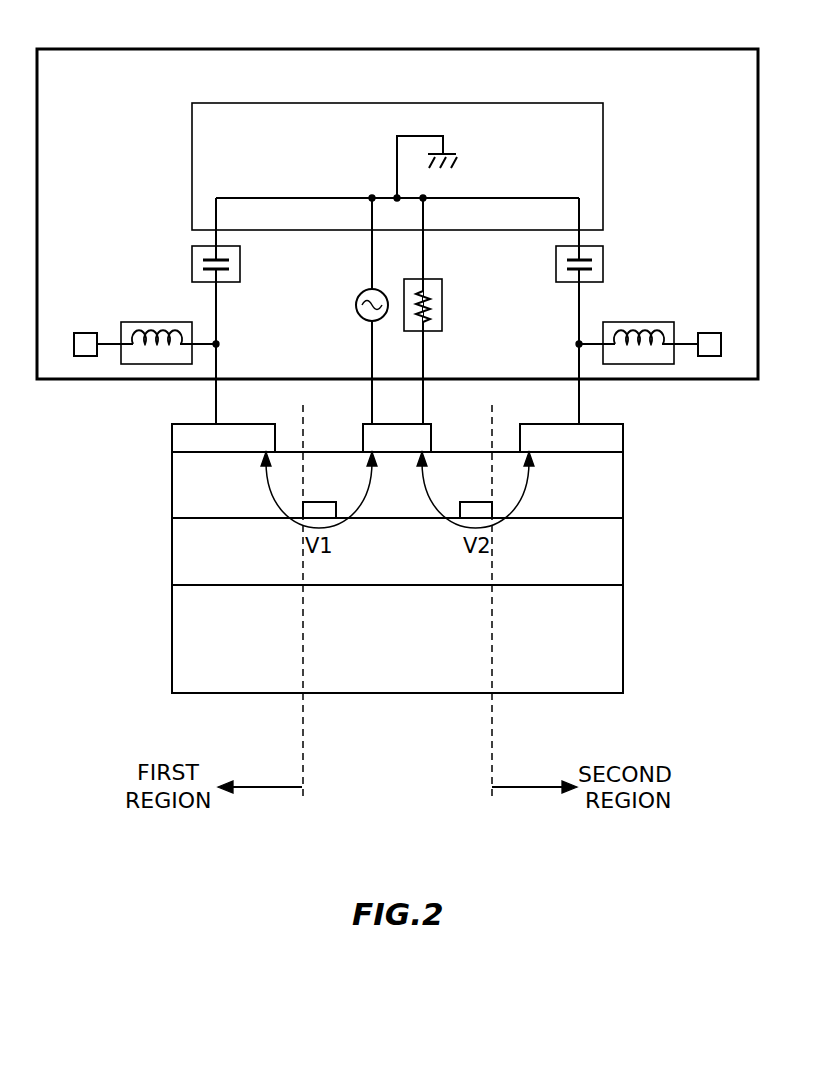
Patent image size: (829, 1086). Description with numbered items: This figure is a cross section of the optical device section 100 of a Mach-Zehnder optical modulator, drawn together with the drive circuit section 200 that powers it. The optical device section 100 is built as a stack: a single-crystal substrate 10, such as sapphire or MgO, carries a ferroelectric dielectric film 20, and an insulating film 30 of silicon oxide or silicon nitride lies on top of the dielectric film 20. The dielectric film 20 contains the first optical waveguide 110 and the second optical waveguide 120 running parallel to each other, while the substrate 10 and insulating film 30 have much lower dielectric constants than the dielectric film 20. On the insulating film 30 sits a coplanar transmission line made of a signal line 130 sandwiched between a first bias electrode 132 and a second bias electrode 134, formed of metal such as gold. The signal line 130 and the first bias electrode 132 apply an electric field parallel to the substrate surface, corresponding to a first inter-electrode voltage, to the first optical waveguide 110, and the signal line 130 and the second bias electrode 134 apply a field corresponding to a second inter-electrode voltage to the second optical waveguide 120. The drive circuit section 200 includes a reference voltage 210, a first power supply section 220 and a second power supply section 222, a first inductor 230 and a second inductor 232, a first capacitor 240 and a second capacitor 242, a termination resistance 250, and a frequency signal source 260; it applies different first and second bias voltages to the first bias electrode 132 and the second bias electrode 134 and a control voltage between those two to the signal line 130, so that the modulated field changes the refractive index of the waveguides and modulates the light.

The drive circuit section 200 is at (670, 49).
The reference voltage 210 is at (500, 103).
The first power supply section 220 is at (84, 330).
The second power supply section 222 is at (710, 332).
The first inductor 230 is at (157, 321).
The second inductor 232 is at (641, 321).
The first capacitor 240 is at (240, 263).
The second capacitor 242 is at (556, 265).
The termination resistance 250 is at (433, 332).
The frequency signal source 260 is at (361, 317).
The optical device section 100 is at (559, 695).
The substrate 10 is at (181, 640).
The dielectric film 20 is at (181, 552).
The insulating film 30 is at (181, 485).
The first optical waveguide 110 is at (321, 500).
The second optical waveguide 120 is at (476, 500).
The signal line 130 is at (428, 421).
The first bias electrode 132 is at (193, 422).
The second bias electrode 134 is at (601, 422).